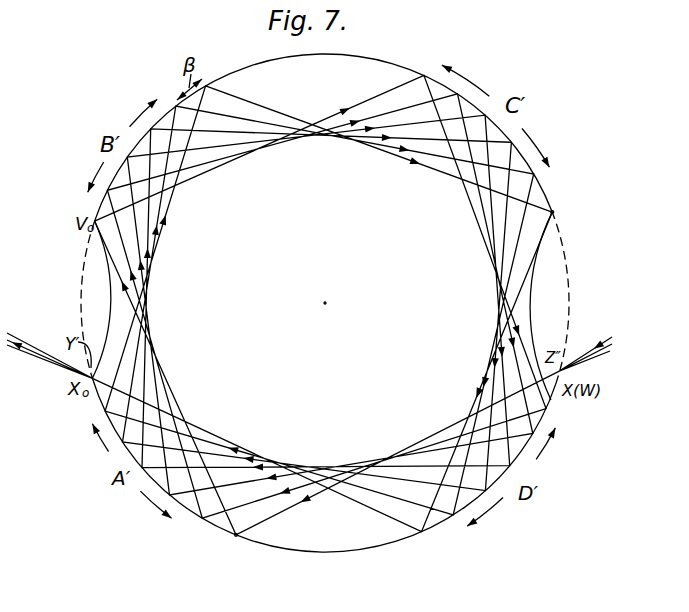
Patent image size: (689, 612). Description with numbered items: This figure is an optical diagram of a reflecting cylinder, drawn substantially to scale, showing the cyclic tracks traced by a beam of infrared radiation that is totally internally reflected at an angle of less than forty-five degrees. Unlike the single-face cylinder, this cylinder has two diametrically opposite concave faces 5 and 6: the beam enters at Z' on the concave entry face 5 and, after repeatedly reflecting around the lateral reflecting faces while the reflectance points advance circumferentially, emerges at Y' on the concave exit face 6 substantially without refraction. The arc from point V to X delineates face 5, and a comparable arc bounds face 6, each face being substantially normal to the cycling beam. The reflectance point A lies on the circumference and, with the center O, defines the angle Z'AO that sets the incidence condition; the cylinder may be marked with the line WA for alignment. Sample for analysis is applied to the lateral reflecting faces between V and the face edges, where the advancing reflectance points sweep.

The concave entry face 5 is at (535, 270).
The concave exit face 6 is at (97, 258).
The reflectance point A is at (232, 548).
The center of the cylinder O is at (335, 309).
The end point V of the arc VX V is at (562, 215).